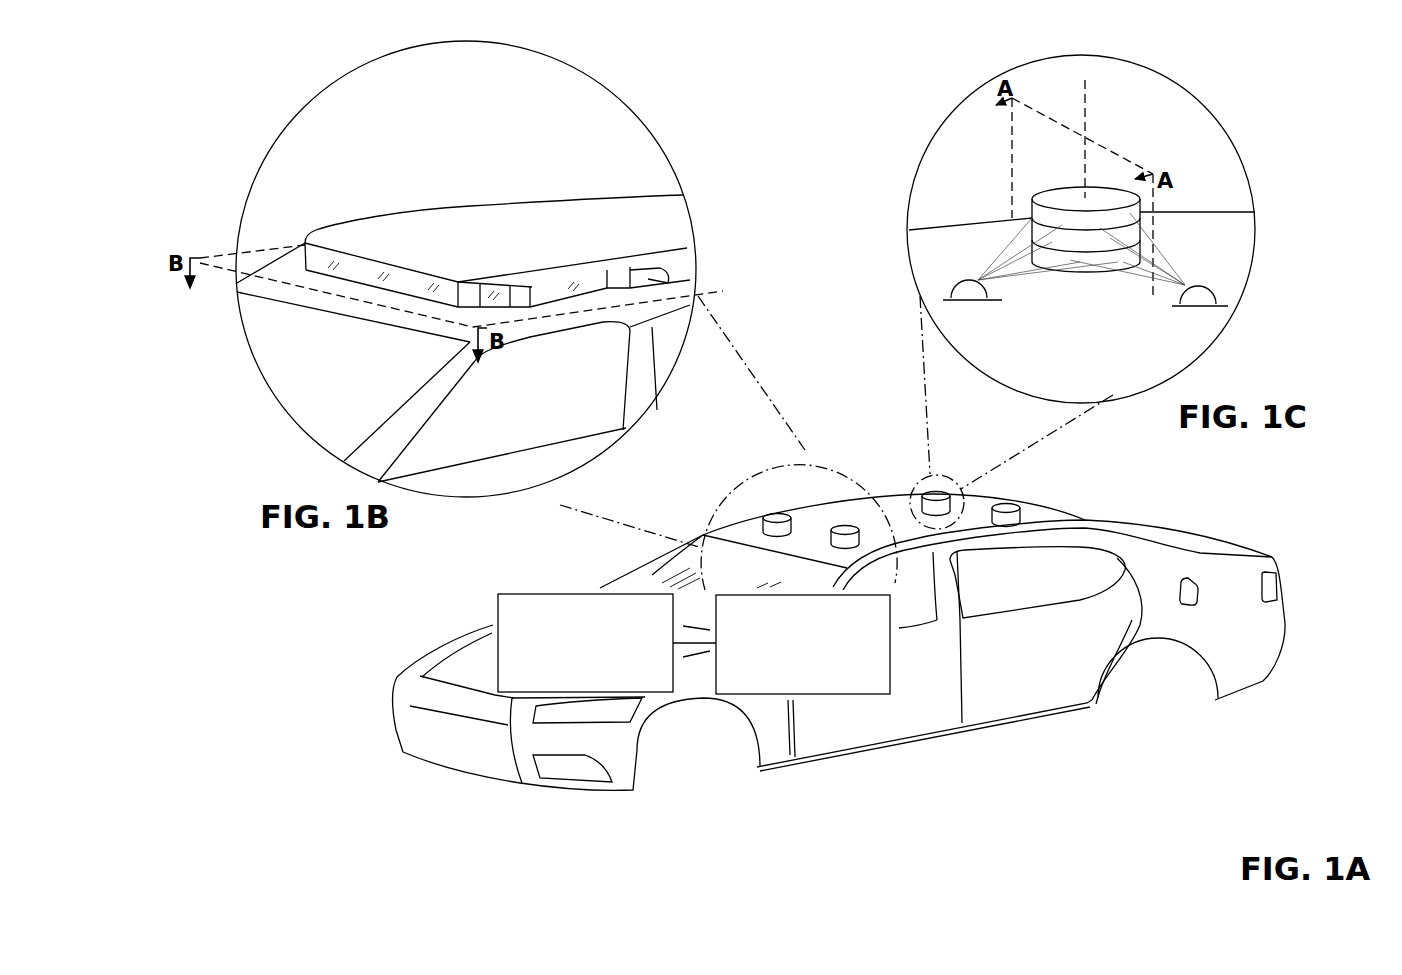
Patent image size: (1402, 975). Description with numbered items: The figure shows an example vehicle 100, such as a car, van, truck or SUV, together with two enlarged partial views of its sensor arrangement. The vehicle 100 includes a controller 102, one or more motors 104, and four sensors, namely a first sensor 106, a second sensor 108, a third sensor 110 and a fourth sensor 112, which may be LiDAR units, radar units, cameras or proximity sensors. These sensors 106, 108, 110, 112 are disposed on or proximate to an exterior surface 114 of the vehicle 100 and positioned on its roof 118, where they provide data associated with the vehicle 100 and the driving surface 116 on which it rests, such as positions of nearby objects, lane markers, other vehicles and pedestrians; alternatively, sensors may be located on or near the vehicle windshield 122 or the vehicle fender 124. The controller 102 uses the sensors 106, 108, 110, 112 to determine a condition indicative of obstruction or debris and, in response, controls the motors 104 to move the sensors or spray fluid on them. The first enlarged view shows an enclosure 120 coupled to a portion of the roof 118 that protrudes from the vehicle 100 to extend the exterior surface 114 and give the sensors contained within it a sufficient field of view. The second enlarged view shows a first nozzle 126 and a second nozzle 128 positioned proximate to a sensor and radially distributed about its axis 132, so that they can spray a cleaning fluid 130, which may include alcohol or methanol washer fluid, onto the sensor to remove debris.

In FIG. 1A, the vehicle 100 is at (300, 636).
In FIG. 1A, the controller 102 is at (789, 666).
In FIG. 1A, the motors 104 is at (572, 666).
In FIG. 1C, the first sensor 106 is at (1002, 152).
In FIG. 1A, the first sensor 106 is at (759, 513).
In FIG. 1C, the second sensor 108 is at (1086, 229).
In FIG. 1A, the second sensor 108 is at (829, 525).
In FIG. 1C, the third sensor 110 is at (1086, 229).
In FIG. 1A, the third sensor 110 is at (918, 493).
In FIG. 1C, the fourth sensor 112 is at (1027, 193).
In FIG. 1A, the fourth sensor 112 is at (1028, 506).
In FIG. 1B, the exterior surface 114 is at (490, 234).
In FIG. 1A, the exterior surface 114 is at (857, 667).
In FIG. 1A, the driving surface 116 is at (919, 861).
In FIG. 1B, the roof 118 is at (293, 280).
In FIG. 1A, the roof 118 is at (853, 513).
In FIG. 1B, the enclosure 120 is at (323, 228).
In FIG. 1A, the vehicle windshield 122 is at (658, 584).
In FIG. 1A, the vehicle fender 124 is at (625, 743).
In FIG. 1C, the first nozzle 126 is at (953, 285).
In FIG. 1C, the second nozzle 128 is at (1216, 288).
In FIG. 1C, the fluid 130 is at (997, 245).
In FIG. 1C, the axis 132 is at (1085, 86).